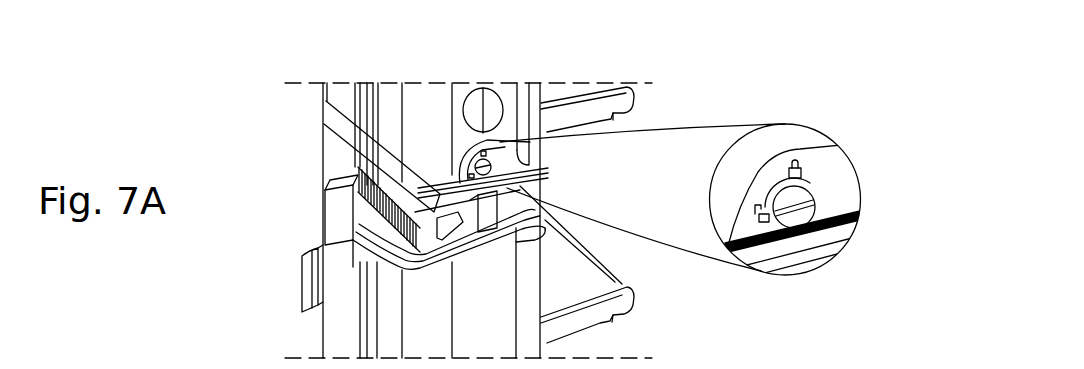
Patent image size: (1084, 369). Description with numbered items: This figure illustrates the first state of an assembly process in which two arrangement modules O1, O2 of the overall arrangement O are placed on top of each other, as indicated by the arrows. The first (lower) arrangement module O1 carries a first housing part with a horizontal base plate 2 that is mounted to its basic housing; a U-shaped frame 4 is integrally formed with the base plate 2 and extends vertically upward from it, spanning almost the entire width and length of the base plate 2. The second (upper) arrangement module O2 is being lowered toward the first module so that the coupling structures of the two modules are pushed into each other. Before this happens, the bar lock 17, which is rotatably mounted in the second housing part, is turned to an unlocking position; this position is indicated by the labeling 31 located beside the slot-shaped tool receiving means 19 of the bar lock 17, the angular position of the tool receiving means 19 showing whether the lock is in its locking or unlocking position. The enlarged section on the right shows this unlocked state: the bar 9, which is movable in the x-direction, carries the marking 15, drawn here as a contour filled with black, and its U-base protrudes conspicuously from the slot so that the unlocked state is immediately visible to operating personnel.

The medical device / apparatus O is at (258, 106).
The first arrangement module O1 is at (297, 281).
The second arrangement module O2 is at (536, 78).
The base plate 2 is at (343, 184).
The U-shaped frame 4 is at (557, 233).
The bar lock 17 is at (508, 166).
The tool receiving means 19 is at (816, 200).
The labeling 31 is at (797, 160).
The bar 9 is at (832, 244).
The marking 15 is at (856, 222).